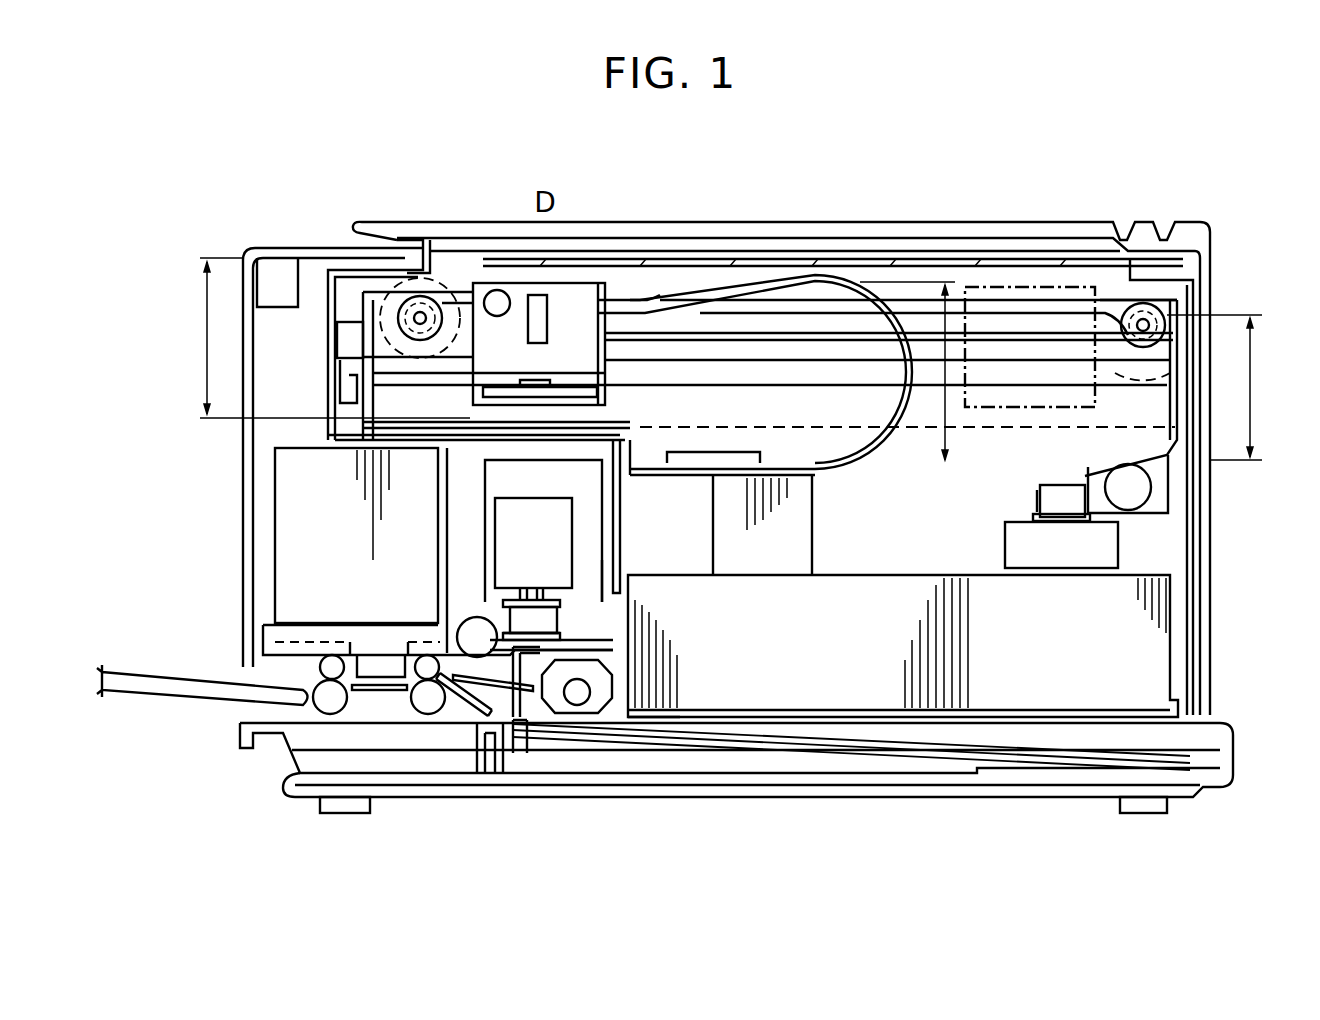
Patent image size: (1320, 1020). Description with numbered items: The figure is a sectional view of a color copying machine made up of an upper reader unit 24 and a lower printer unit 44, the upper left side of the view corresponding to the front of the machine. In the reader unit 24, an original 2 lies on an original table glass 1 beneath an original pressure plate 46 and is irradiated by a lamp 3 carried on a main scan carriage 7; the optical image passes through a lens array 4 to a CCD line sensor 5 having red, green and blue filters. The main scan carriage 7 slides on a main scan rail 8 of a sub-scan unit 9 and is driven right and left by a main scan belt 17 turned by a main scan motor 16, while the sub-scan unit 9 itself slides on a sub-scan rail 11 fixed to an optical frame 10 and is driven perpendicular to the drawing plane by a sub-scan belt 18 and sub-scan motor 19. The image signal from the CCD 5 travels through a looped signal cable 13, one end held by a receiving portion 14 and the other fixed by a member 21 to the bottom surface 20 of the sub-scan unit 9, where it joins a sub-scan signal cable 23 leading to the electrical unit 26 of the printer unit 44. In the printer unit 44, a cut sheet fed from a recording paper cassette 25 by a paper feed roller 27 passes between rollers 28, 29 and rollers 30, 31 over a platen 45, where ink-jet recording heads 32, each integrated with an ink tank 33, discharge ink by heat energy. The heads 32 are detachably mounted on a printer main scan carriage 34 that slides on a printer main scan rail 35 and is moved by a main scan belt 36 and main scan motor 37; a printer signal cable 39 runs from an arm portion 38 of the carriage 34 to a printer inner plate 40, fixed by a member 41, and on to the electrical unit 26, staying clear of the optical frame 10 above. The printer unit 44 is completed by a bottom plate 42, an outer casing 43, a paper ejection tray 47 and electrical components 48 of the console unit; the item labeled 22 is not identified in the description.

The original table glass 1 is at (915, 315).
The original 2 is at (1024, 250).
The lamp 3 is at (495, 296).
The lens array 4 is at (538, 297).
The CCD line sensor 5 is at (590, 284).
The main scan carriage 7 is at (550, 382).
The main scan rail 8 is at (768, 373).
The sub-scan unit 9 is at (906, 330).
The optical frame 10 is at (337, 387).
The sub-scan rail 11 is at (1140, 483).
The signal cable 13 is at (828, 280).
The receiving portion 14 is at (625, 292).
The main scan motor 16 is at (407, 275).
The main scan belt 17 is at (452, 300).
The sub-scan belt 18 is at (1087, 498).
The sub-scan motor 19 is at (1110, 545).
The bottom surface 20 is at (650, 427).
The member 21 is at (717, 453).
The outer case 22 is at (307, 305).
The sub-scan signal cable 23 is at (797, 533).
The reader unit 24 is at (768, 407).
The recording paper cassette 25 is at (237, 740).
The electrical unit 26 is at (1150, 657).
The paper feed roller 27 is at (628, 720).
The roller 28 is at (430, 702).
The roller 29 is at (443, 680).
The roller 30 is at (330, 672).
The roller 31 is at (327, 705).
The recording head 32 is at (390, 667).
The ink tank 33 is at (290, 483).
The printer main scan carriage 34 is at (460, 551).
The printer main scan rail 35 is at (458, 615).
The main scan belt 36 is at (582, 698).
The main scan motor 37 is at (520, 722).
The arm portion 38 is at (517, 455).
The printer signal cable 39 is at (596, 597).
The printer inner plate 40 is at (673, 717).
The member 41 is at (537, 642).
The bottom plate 42 is at (910, 793).
The outer casing 43 is at (238, 380).
The printer unit 44 is at (780, 630).
The platen 45 is at (357, 692).
The original pressure plate 46 is at (1083, 228).
The paper ejection tray 47 is at (150, 700).
The electrical components 48 is at (263, 267).